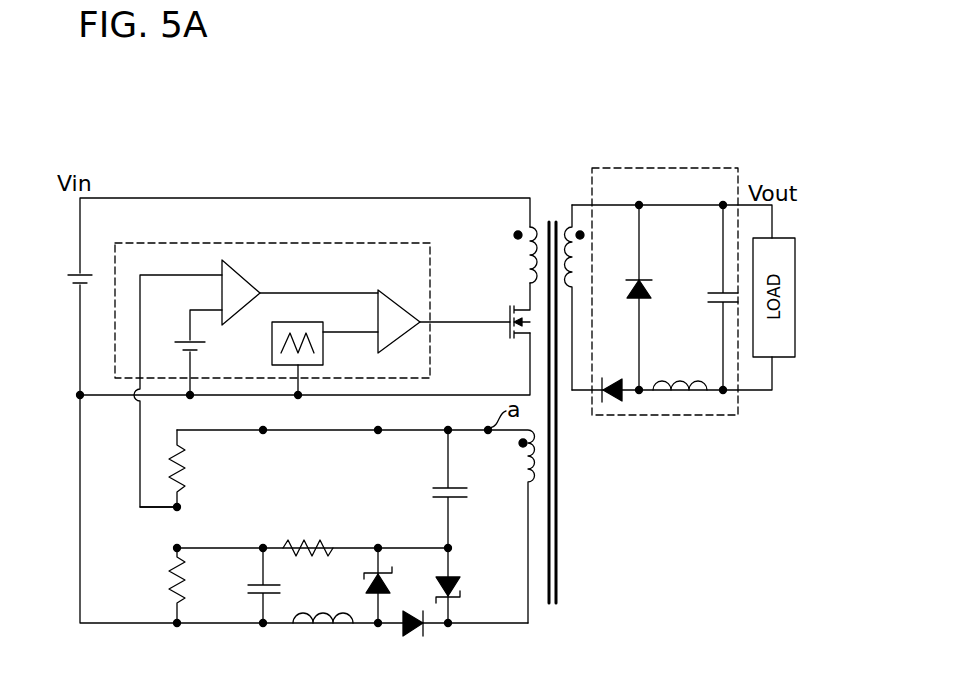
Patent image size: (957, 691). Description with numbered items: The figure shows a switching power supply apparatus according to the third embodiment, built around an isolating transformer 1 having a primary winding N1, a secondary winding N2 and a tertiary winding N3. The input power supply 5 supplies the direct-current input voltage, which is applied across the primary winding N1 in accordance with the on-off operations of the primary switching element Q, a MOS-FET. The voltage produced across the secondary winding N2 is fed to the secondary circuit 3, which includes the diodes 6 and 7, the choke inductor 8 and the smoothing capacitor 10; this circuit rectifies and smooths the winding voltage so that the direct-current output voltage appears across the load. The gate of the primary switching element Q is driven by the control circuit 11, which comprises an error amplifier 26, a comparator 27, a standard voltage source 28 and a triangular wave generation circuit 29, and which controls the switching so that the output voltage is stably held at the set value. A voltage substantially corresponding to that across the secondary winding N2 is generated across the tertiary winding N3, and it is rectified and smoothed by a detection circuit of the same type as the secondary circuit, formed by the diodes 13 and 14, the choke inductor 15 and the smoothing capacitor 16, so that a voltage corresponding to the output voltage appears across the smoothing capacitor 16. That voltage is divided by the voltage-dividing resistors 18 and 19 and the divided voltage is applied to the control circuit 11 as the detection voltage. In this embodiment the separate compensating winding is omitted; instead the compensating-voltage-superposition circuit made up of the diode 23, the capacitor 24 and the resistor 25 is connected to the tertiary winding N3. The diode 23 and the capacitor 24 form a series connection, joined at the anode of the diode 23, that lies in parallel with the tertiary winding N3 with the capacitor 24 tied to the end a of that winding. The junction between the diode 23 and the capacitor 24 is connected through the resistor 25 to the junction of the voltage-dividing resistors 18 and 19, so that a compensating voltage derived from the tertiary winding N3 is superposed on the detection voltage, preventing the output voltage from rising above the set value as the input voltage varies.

The transformer 1 is at (553, 218).
The secondary circuit 3 is at (636, 168).
The input power supply 5 is at (68, 273).
The diode 6 is at (618, 377).
The diode 7 is at (645, 294).
The choke inductor 8 is at (676, 381).
The smoothing capacitor 10 is at (712, 293).
The control circuit 11 is at (275, 243).
The diode 13 is at (376, 598).
The diode 14 is at (407, 612).
The choke inductor 15 is at (318, 613).
The smoothing capacitor 16 is at (260, 597).
The voltage-dividing resistor 18 is at (170, 473).
The voltage-dividing resistor 19 is at (170, 576).
The diode 23 is at (455, 600).
The capacitor 24 is at (440, 488).
The resistor 25 is at (310, 536).
The error amplifier 26 is at (262, 272).
The comparator 27 is at (388, 290).
The standard voltage source 28 is at (175, 352).
The triangular wave generation circuit 29 is at (270, 360).
The primary switching element Q is at (505, 339).
The primary winding N1 is at (530, 258).
The secondary winding N2 is at (578, 256).
The tertiary winding N3 is at (545, 462).